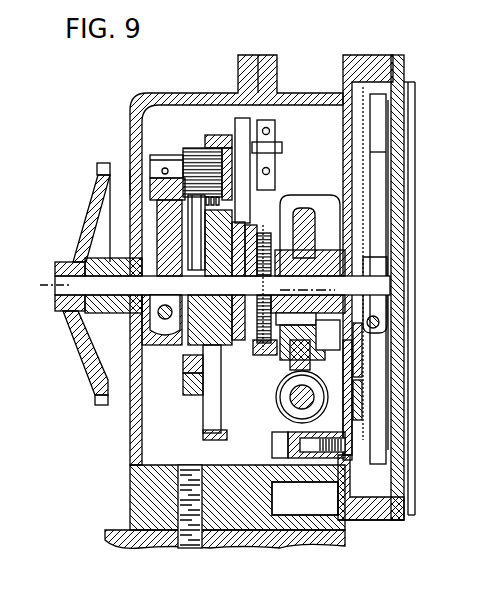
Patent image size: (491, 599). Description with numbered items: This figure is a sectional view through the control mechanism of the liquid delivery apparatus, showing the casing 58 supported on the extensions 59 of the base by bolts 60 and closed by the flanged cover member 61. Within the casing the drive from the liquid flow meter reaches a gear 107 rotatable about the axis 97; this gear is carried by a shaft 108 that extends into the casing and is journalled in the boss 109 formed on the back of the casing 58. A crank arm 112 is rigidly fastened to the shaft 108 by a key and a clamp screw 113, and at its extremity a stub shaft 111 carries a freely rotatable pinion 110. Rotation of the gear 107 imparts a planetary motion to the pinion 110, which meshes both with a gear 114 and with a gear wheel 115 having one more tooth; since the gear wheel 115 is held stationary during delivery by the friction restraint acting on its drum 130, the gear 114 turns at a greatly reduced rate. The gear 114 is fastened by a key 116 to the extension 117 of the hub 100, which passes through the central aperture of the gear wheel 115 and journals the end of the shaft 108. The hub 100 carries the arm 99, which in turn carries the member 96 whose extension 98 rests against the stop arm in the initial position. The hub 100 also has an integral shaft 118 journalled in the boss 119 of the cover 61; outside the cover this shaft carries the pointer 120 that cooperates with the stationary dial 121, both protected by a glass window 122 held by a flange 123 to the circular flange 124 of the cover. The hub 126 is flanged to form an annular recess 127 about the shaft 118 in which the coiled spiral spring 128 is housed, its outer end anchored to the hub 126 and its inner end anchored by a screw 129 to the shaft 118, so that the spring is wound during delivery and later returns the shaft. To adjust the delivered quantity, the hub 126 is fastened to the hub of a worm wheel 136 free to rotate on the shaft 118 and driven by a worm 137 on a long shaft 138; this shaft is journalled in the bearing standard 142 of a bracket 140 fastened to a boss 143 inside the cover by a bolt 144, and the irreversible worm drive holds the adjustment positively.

The control mechanism casing 58 is at (172, 93).
The extensions 59 is at (240, 548).
The bolts 60 is at (178, 500).
The flanged cover member 61 is at (308, 93).
The member 96 is at (236, 120).
The axis 97 is at (340, 287).
The extension 98 is at (282, 148).
The arm 99 is at (252, 192).
The hub 100 is at (268, 358).
The gear 107 is at (99, 186).
The shaft 108 is at (63, 300).
The boss 109 is at (80, 335).
The pinion 110 is at (194, 150).
The stub shaft 111 is at (157, 168).
The crank arm 112 is at (136, 182).
The clamp screw 113 is at (160, 322).
The gear 114 is at (185, 372).
The gear wheel 115 is at (205, 380).
The key 116 is at (213, 268).
The extension 117 is at (195, 262).
The shaft 118 is at (387, 262).
The boss 119 is at (332, 250).
The pointer 120 is at (386, 190).
The stationary dial 121 is at (363, 132).
The glass window 122 is at (404, 422).
The flange 123 is at (404, 508).
The circular flange 124 is at (372, 521).
The hub 126 is at (252, 319).
The annular recess 127 is at (287, 210).
The coiled spiral spring 128 is at (320, 345).
The screw 129 is at (307, 292).
The drum 130 is at (212, 442).
The worm wheel 136 is at (362, 357).
The worm 137 is at (362, 388).
The shaft 138 is at (290, 411).
The bracket 140 is at (302, 468).
The bearing standard 142 is at (415, 400).
The boss 143 is at (330, 426).
The bolt 144 is at (334, 484).